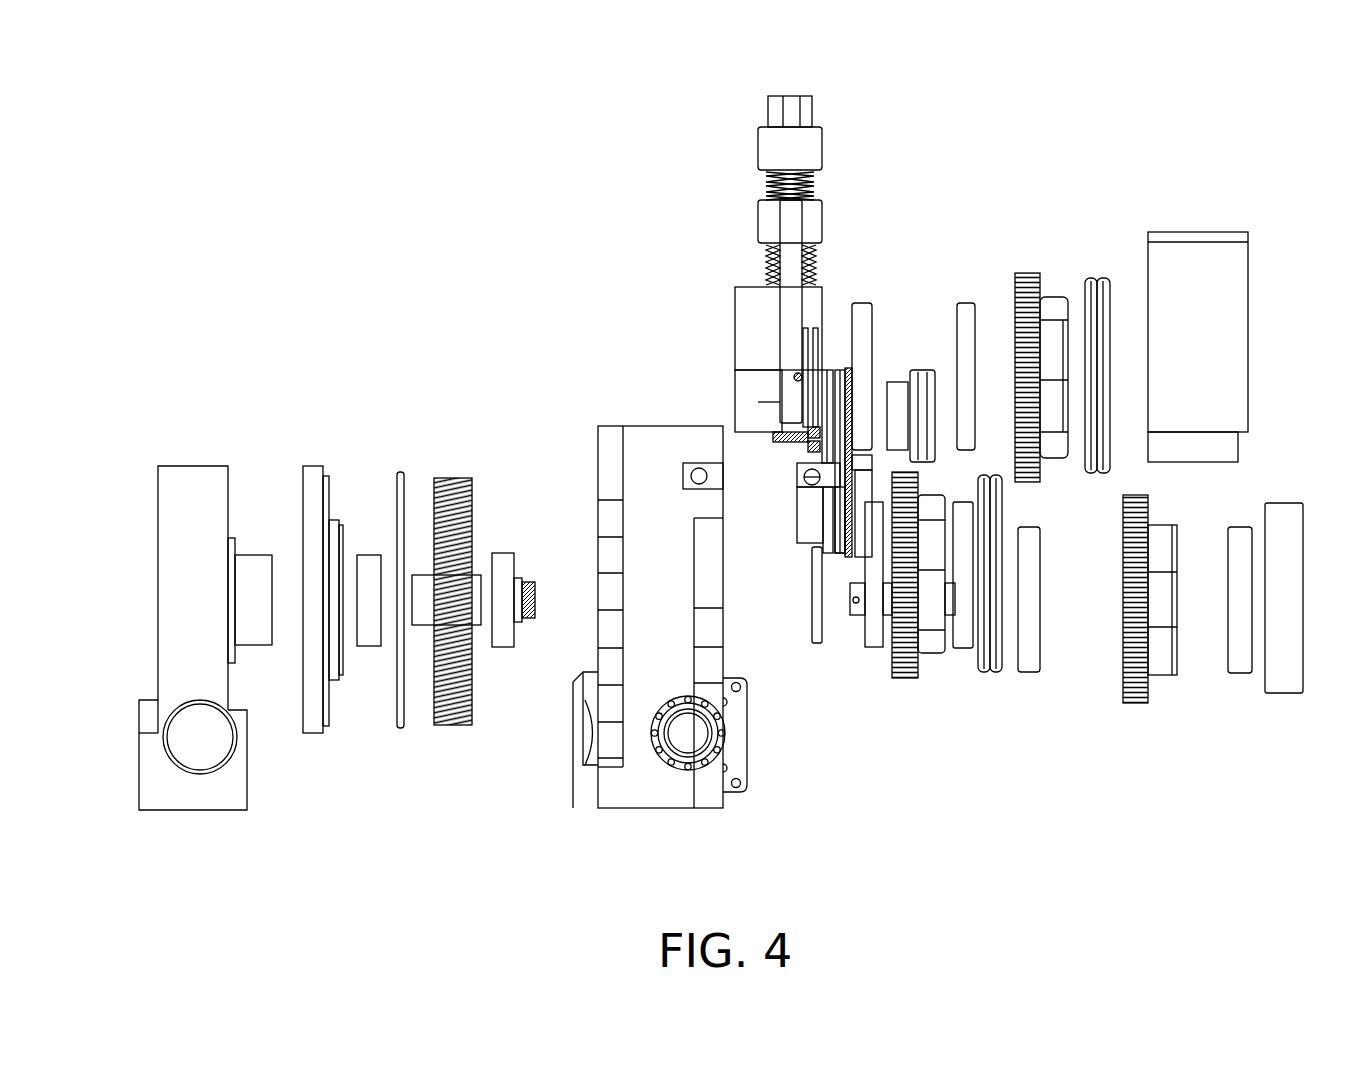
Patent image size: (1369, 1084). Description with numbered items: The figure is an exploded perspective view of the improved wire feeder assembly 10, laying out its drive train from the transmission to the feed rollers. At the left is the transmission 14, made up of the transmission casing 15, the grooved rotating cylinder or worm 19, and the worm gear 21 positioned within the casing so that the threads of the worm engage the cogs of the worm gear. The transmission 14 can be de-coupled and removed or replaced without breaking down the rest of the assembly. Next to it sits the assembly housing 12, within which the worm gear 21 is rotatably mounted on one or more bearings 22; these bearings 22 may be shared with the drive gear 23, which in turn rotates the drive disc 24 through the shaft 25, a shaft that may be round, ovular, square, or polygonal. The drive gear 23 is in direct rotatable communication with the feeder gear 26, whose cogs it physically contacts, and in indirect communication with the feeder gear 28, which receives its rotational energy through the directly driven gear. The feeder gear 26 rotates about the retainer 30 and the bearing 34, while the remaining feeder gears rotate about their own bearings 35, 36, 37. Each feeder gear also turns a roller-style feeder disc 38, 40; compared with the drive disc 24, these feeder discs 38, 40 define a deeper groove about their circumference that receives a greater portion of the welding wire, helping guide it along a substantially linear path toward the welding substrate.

The wire feeder assembly 10 is at (164, 104).
The assembly housing 12 is at (657, 438).
The transmission 14 is at (592, 352).
The transmission casing 15 is at (204, 478).
The worm 19 is at (686, 737).
The worm gear 21 is at (452, 490).
The bearings 22 is at (500, 560).
The drive gear 23 is at (1133, 705).
The drive disc 24 is at (1283, 695).
The shaft 25 is at (850, 615).
The feeder gear 26 is at (905, 680).
The feeder gear 28 is at (1025, 275).
The retainer 30 is at (811, 598).
The bearing 34 is at (1028, 665).
The bearing 35 is at (962, 640).
The bearing 36 is at (865, 318).
The bearing 37 is at (968, 305).
The feeder disc 38 is at (988, 675).
The feeder disc 40 is at (1095, 475).